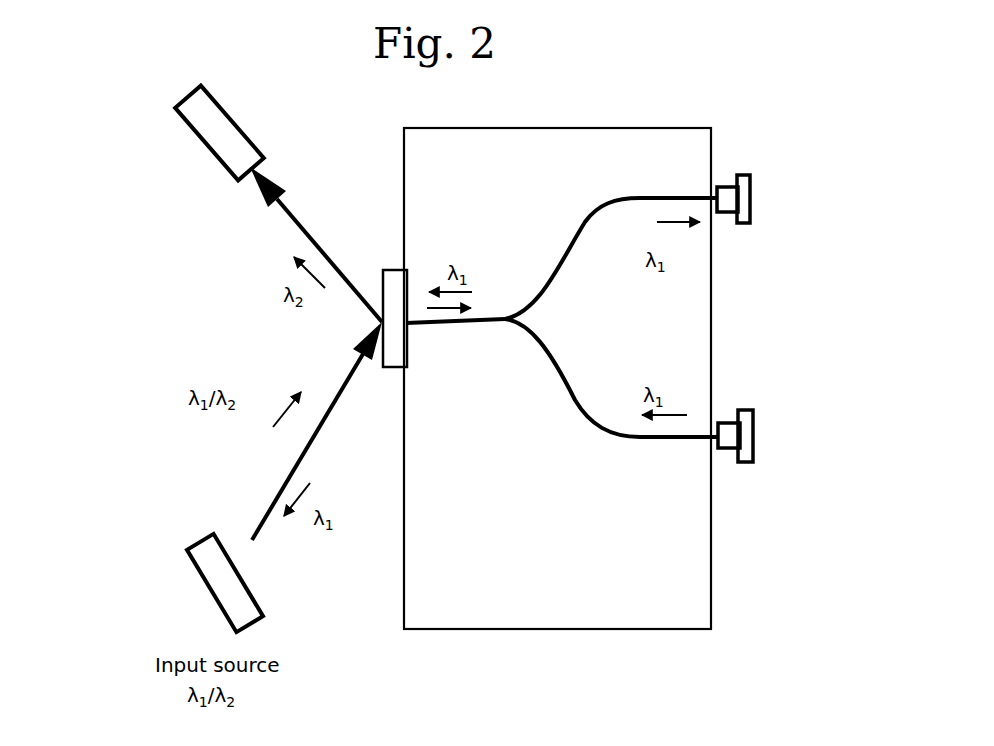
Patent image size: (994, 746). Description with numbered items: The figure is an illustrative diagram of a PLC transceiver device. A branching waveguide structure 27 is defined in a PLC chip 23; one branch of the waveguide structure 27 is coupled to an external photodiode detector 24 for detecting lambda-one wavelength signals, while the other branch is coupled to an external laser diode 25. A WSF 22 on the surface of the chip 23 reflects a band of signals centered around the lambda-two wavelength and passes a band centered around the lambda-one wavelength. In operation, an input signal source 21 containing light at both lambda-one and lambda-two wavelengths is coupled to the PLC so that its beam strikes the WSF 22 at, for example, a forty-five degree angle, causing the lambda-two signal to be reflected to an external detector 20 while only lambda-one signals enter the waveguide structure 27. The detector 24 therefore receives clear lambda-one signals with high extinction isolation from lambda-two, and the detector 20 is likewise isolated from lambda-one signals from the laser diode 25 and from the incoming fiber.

The external detector 20 is at (200, 135).
The input signal source 21 is at (220, 562).
The WSF 22 is at (397, 367).
The PLC chip 23 is at (678, 615).
The external photodiode detector 24 is at (748, 225).
The external laser diode 25 is at (752, 462).
The branching waveguide structure 27 is at (582, 235).